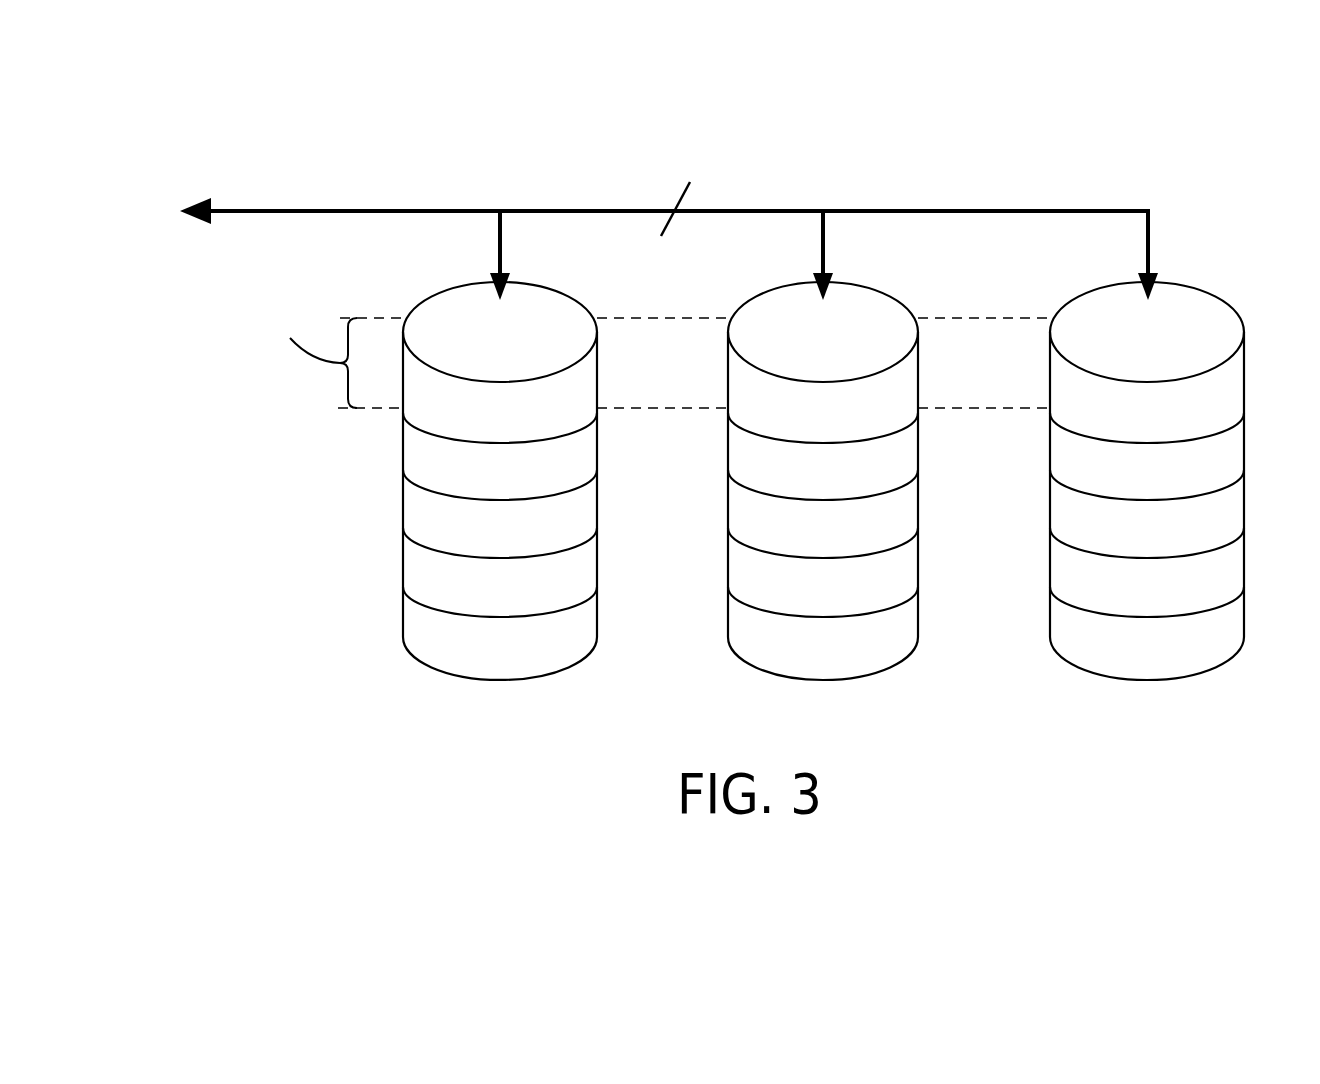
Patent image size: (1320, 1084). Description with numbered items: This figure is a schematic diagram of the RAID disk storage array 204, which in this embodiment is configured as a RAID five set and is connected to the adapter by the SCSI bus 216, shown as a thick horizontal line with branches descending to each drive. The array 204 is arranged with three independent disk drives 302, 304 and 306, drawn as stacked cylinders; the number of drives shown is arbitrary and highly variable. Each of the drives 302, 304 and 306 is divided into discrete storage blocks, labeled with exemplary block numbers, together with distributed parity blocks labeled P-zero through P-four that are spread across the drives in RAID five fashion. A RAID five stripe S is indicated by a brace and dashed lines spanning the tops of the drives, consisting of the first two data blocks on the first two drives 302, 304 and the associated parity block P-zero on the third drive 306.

The RAID disk storage array 204 is at (1044, 151).
The SCSI bus 216 is at (653, 210).
The disk drive 302 is at (500, 681).
The disk drive 304 is at (823, 681).
The disk drive 306 is at (1147, 681).